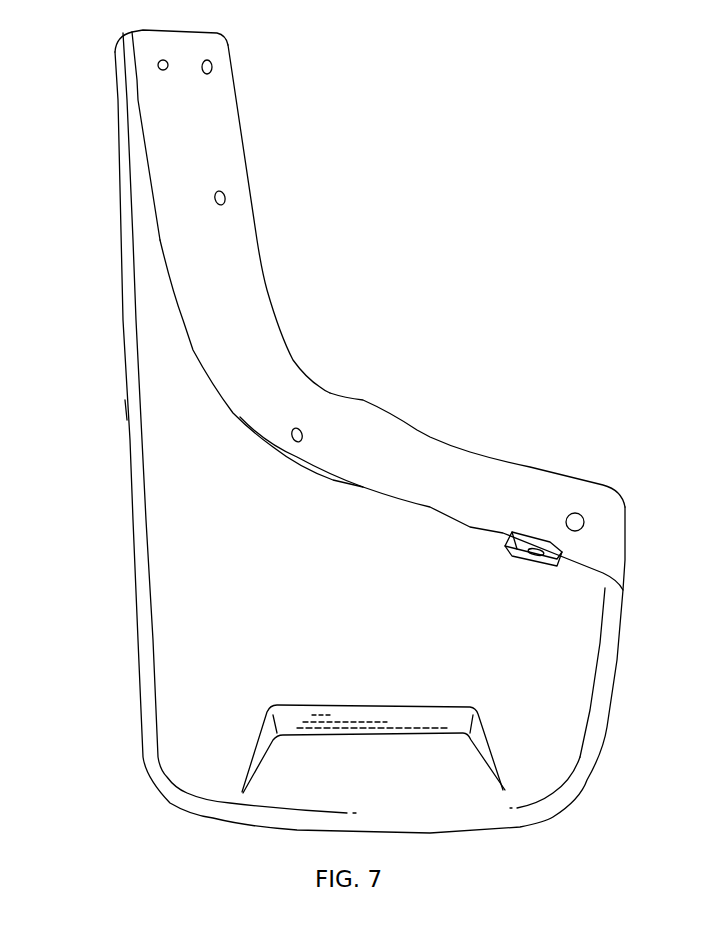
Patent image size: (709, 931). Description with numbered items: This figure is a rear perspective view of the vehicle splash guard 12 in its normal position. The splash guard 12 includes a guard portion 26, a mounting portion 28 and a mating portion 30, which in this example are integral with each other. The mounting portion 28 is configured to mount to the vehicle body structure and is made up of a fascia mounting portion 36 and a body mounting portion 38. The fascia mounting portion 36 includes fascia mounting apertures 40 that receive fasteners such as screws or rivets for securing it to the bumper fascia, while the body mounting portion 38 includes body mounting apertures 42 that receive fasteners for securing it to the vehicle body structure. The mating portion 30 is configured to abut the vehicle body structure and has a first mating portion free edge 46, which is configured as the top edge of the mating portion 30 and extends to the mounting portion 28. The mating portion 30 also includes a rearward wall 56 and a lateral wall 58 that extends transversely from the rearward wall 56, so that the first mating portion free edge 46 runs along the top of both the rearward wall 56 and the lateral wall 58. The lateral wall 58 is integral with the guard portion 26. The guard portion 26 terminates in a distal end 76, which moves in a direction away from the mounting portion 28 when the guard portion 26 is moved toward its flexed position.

The vehicle splash guard 12 is at (483, 178).
The guard portion 26 is at (560, 680).
The mounting portion 28 is at (258, 293).
The mating portion 30 is at (218, 437).
The fascia mounting portion 36 is at (438, 467).
The body mounting portion 38 is at (207, 128).
The fascia mounting apertures 40 is at (302, 426).
The body mounting apertures 42 is at (212, 65).
The first mating portion free edge 46 is at (195, 355).
The rearward wall 56 is at (210, 463).
The lateral wall 58 is at (118, 140).
The distal end 76 is at (548, 768).